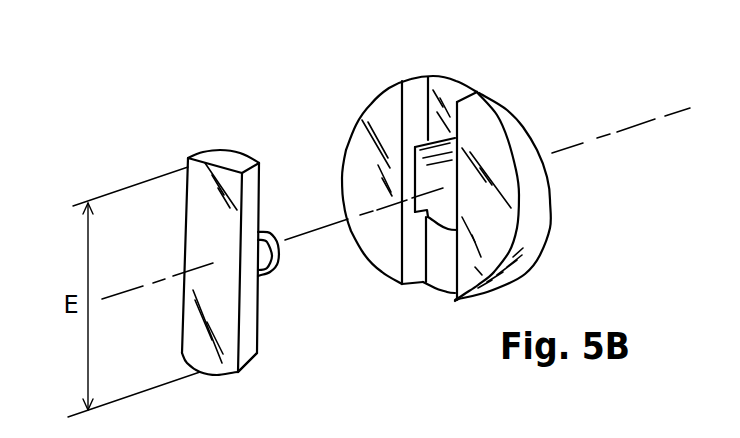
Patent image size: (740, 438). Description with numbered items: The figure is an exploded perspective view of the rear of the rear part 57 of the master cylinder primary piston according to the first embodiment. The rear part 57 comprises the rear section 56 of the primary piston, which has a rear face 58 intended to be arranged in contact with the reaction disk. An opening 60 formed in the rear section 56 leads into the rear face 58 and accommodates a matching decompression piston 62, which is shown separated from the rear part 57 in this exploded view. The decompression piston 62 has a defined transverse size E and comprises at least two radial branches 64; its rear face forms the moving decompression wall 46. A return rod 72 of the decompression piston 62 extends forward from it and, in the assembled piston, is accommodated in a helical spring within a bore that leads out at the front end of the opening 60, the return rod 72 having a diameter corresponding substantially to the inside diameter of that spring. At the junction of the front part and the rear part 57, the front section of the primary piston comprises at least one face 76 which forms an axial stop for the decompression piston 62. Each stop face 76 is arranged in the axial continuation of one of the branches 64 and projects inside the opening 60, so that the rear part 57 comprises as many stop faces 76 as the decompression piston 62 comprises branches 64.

The moving decompression wall 46 is at (213, 241).
The rear section 56 is at (541, 204).
The rear part 57 is at (526, 151).
The rear face 58 is at (392, 126).
The opening 60 is at (428, 180).
The decompression piston 62 is at (200, 220).
The radial branches 64 is at (247, 183).
The return rod 72 is at (278, 253).
The stop face 76 is at (456, 88).